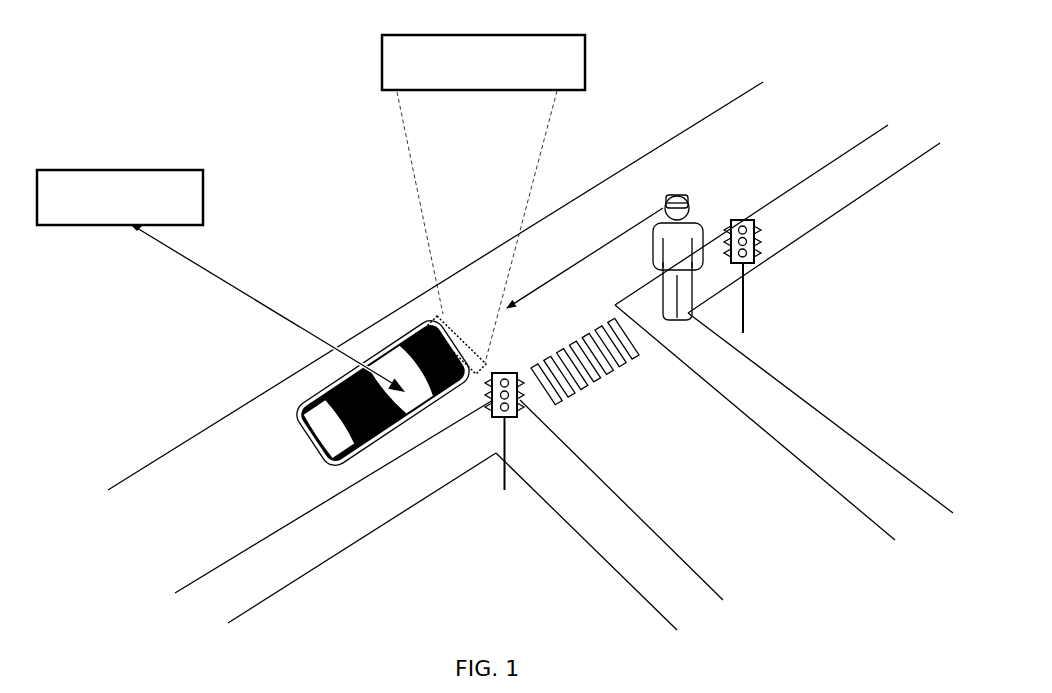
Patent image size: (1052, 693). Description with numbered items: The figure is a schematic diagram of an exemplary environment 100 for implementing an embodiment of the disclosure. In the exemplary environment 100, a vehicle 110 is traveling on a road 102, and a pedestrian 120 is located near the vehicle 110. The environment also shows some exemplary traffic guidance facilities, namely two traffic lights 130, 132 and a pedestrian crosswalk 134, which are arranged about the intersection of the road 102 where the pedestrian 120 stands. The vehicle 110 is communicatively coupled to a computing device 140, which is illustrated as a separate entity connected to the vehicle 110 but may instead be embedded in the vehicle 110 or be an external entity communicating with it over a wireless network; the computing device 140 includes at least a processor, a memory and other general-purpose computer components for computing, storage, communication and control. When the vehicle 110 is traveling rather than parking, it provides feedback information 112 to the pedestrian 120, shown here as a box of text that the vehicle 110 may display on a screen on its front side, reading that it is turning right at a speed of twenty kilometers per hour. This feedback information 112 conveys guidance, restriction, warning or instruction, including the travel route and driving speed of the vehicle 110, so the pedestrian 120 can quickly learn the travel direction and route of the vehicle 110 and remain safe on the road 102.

The exemplary environment 100 is at (256, 58).
The road 102 is at (530, 356).
The vehicle 110 is at (292, 431).
The feedback information 112 is at (535, 36).
The pedestrian 120 is at (674, 195).
The traffic light 130 is at (762, 233).
The traffic light 132 is at (507, 430).
The pedestrian crosswalk 134 is at (553, 402).
The computing device 140 is at (135, 170).